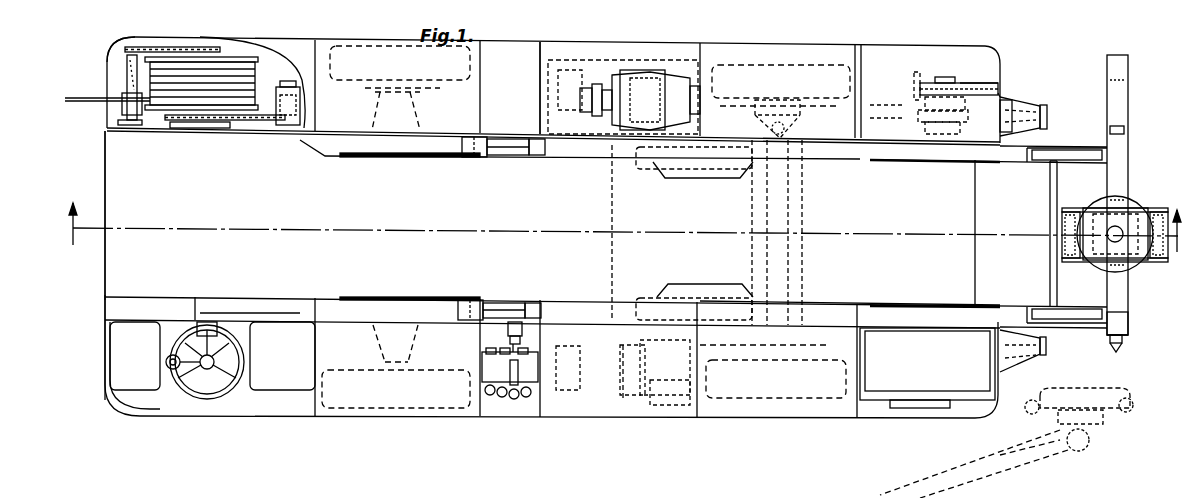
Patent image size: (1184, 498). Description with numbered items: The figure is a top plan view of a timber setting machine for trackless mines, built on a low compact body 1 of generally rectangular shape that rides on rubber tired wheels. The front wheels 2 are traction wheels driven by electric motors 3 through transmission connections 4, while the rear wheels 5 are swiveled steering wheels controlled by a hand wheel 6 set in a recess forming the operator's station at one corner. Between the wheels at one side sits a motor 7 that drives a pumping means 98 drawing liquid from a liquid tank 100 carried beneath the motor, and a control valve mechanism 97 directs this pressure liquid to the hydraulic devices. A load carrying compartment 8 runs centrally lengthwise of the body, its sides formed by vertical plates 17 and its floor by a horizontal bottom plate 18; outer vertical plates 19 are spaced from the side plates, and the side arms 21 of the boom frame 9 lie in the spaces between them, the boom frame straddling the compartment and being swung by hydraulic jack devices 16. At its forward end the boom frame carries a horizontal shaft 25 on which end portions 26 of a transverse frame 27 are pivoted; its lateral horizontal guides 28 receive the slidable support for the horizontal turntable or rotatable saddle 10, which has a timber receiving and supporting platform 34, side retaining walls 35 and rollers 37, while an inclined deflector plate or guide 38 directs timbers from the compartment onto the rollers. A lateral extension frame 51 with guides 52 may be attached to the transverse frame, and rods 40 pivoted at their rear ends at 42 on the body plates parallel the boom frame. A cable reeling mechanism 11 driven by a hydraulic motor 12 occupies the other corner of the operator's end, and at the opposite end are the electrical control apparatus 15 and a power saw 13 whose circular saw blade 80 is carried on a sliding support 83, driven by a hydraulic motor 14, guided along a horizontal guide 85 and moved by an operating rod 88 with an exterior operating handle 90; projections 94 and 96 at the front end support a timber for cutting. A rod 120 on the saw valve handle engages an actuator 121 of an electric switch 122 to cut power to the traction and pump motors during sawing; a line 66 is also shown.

The body 1 is at (596, 412).
The front wheels 2 is at (836, 66).
The motors 3 is at (632, 32).
The transmission connections 4 is at (702, 62).
The rear wheels 5 is at (371, 52).
The hand wheel 6 is at (207, 399).
The motor 7 is at (636, 85).
The load carrying compartment 8 is at (160, 148).
The boom frame 9 is at (884, 310).
The horizontal turntable or rotatable saddle 10 is at (1152, 268).
The cable reeling mechanism 11 is at (222, 62).
The hydraulic motor 12 is at (305, 86).
The power saw 13 is at (957, 86).
The hydraulic motor 14 is at (920, 122).
The electrical control apparatus 15 is at (927, 390).
The hydraulic jack devices 16 is at (722, 178).
The vertical plates 17 is at (420, 160).
The horizontal bottom plate 18 is at (104, 282).
The vertical plates 19 is at (436, 132).
The side arms 21 is at (861, 152).
The horizontal shaft 25 is at (1116, 350).
The end portions 26 is at (1125, 338).
The transverse frame 27 is at (1126, 322).
The lateral horizontal guides 28 is at (1120, 198).
The timber receiving and supporting platform 34 is at (1158, 224).
The side retaining walls 35 is at (1140, 222).
The rollers 37 is at (1065, 243).
The deflector plate or guide 38 is at (1047, 172).
The rods 40 is at (510, 147).
The rear pivotal connection of rods 42 is at (474, 158).
The lateral extension frame 51 is at (1130, 62).
The guides 52 is at (1130, 80).
The line 66 is at (598, 247).
The circular saw blade 80 is at (975, 84).
The sliding support 83 is at (920, 118).
The horizontal guide 85 is at (885, 110).
The horizontal operating rod 88 is at (1002, 88).
The operating handle 90 is at (1000, 98).
The projection 94 is at (1046, 114).
The projection 96 is at (1038, 352).
The control valve mechanism 97 is at (492, 378).
The pumping means 98 is at (580, 90).
The liquid tank 100 is at (530, 64).
The rod 120 is at (520, 378).
The actuator 121 is at (508, 347).
The electric switch 122 is at (524, 334).